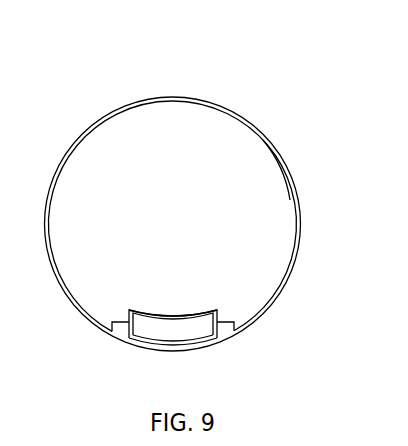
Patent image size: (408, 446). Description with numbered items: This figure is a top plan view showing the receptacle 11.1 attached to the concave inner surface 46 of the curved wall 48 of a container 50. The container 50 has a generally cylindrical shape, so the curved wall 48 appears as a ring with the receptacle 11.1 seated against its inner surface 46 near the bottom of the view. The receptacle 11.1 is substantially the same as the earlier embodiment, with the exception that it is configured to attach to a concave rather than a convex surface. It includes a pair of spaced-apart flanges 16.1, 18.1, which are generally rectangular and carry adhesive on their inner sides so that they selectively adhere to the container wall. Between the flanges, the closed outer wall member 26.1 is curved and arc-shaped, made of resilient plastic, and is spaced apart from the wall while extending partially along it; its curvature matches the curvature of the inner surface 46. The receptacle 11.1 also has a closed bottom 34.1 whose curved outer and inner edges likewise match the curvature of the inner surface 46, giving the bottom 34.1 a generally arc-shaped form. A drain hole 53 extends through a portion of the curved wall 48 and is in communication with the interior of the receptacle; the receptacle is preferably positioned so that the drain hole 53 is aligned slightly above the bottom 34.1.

The container 50 is at (209, 88).
The curved wall 48 is at (200, 116).
The inner surface 46 is at (262, 140).
The receptacle 11.1 is at (189, 306).
The outer wall member 26.1 is at (154, 317).
The drain hole 53 is at (176, 351).
The flange 16.1 is at (117, 323).
The flange 18.1 is at (226, 322).
The bottom 34.1 is at (198, 335).